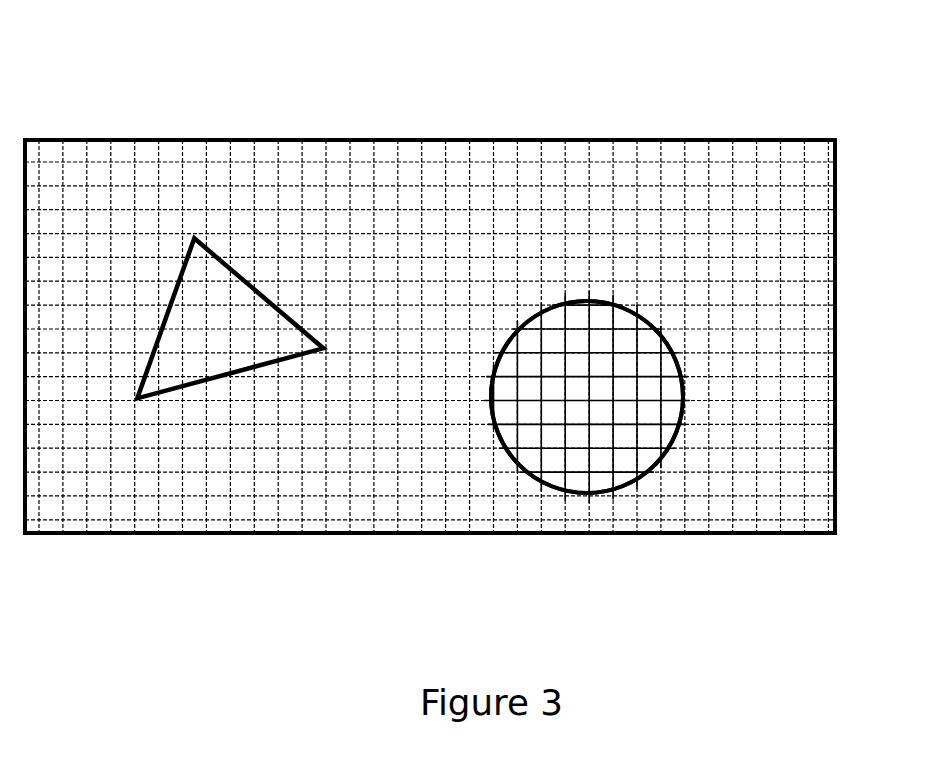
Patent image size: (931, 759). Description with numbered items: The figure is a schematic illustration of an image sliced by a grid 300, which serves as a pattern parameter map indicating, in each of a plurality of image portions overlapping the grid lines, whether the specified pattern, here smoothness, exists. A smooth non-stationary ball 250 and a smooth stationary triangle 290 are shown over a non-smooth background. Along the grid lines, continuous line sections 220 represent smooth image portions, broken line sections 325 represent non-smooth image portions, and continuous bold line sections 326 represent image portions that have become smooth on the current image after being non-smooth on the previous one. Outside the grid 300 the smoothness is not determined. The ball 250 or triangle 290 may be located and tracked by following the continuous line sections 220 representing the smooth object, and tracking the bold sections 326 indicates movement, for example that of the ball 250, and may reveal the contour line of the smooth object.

The grid 300 is at (252, 40).
The broken line sections 325 is at (533, 517).
The continuous bold line sections 326 is at (513, 423).
The smooth stationary triangle 290 is at (190, 388).
The continuous line sections 220 is at (587, 450).
The smooth non-stationary ball 250 is at (665, 460).